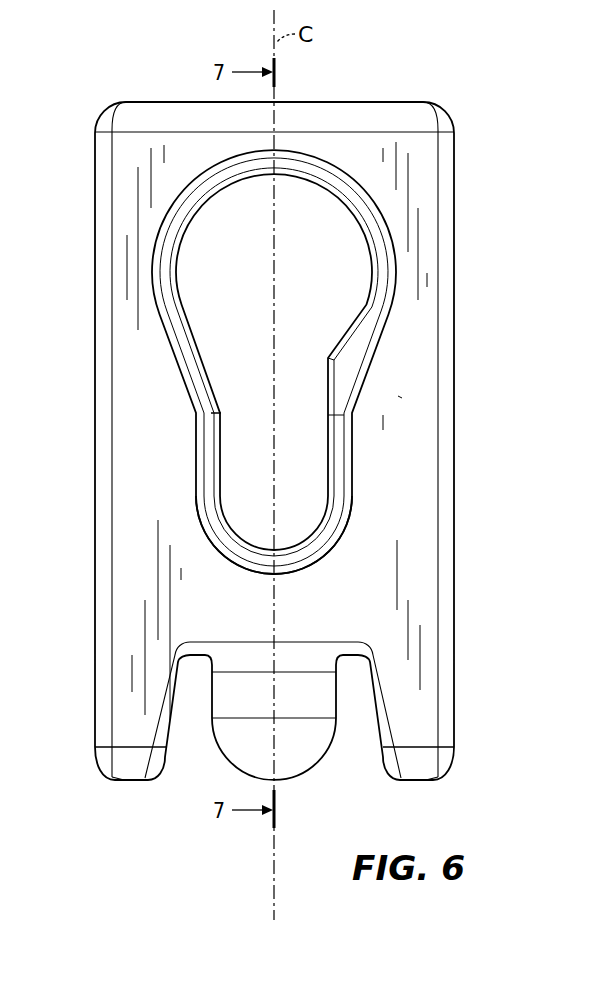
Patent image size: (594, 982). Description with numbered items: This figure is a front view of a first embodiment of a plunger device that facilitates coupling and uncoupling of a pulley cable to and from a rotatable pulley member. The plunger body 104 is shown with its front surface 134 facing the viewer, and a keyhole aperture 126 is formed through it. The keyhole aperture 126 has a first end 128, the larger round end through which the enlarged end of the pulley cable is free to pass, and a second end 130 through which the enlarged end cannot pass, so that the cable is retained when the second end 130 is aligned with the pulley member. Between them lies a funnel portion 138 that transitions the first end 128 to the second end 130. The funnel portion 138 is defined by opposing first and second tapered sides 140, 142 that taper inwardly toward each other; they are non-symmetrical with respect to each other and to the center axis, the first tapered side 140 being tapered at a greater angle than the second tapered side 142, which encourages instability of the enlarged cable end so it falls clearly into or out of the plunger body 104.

The plunger body 104 is at (489, 108).
The keyhole aperture 126 is at (293, 259).
The first end 128 is at (322, 190).
The second end 130 is at (229, 521).
The front surface 134 is at (400, 397).
The funnel portion 138 is at (293, 433).
The first tapered side 140 is at (333, 360).
The second tapered side 142 is at (215, 402).